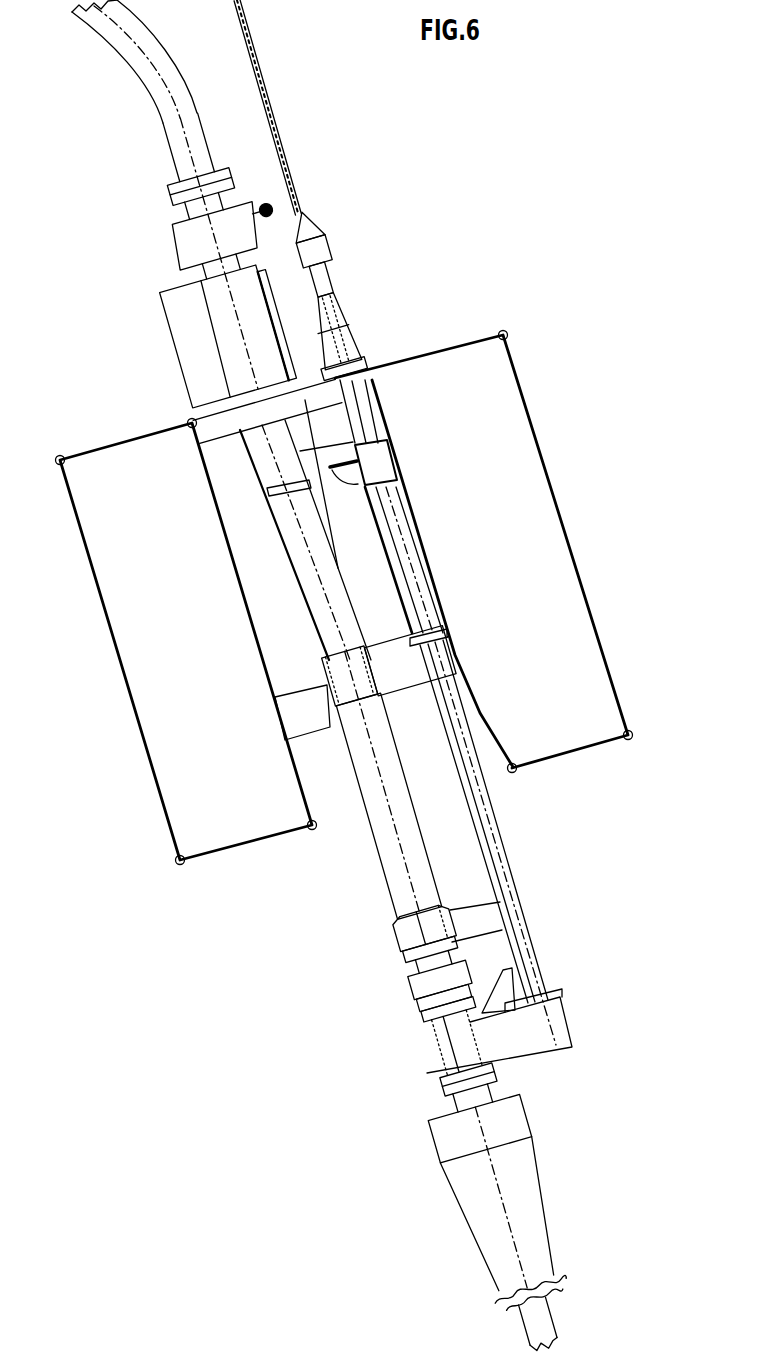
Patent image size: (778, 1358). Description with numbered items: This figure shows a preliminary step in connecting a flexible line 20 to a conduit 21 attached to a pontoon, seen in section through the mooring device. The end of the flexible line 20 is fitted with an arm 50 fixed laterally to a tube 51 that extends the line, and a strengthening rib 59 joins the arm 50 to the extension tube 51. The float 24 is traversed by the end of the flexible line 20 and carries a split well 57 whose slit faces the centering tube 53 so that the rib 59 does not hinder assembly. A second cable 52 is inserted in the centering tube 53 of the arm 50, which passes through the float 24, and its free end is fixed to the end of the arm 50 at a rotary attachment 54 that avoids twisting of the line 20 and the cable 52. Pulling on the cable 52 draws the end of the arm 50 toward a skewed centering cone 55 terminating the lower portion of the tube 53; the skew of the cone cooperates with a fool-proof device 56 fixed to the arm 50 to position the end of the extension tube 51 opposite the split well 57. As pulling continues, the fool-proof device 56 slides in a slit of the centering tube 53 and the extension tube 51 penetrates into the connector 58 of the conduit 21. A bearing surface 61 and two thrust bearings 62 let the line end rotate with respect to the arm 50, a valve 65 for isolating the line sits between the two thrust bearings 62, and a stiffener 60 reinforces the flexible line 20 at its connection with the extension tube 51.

The flexible line 20 is at (553, 1331).
The conduit 21 is at (150, 67).
The float 24 is at (520, 378).
The arm 50 is at (560, 896).
The tube 51 is at (385, 842).
The second cable 52 is at (282, 143).
The centering tube 53 is at (412, 492).
The rotary attachment 54 is at (316, 242).
The skewed centering cone 55 is at (487, 744).
The fool-proof device 56 is at (353, 478).
The split well 57 is at (266, 586).
The connector 58 is at (187, 325).
The strengthening rib 59 is at (386, 662).
The stiffener 60 is at (535, 1198).
The bearing surface 61 is at (353, 687).
The thrust bearings 62 is at (405, 940).
The valve 65 is at (433, 993).